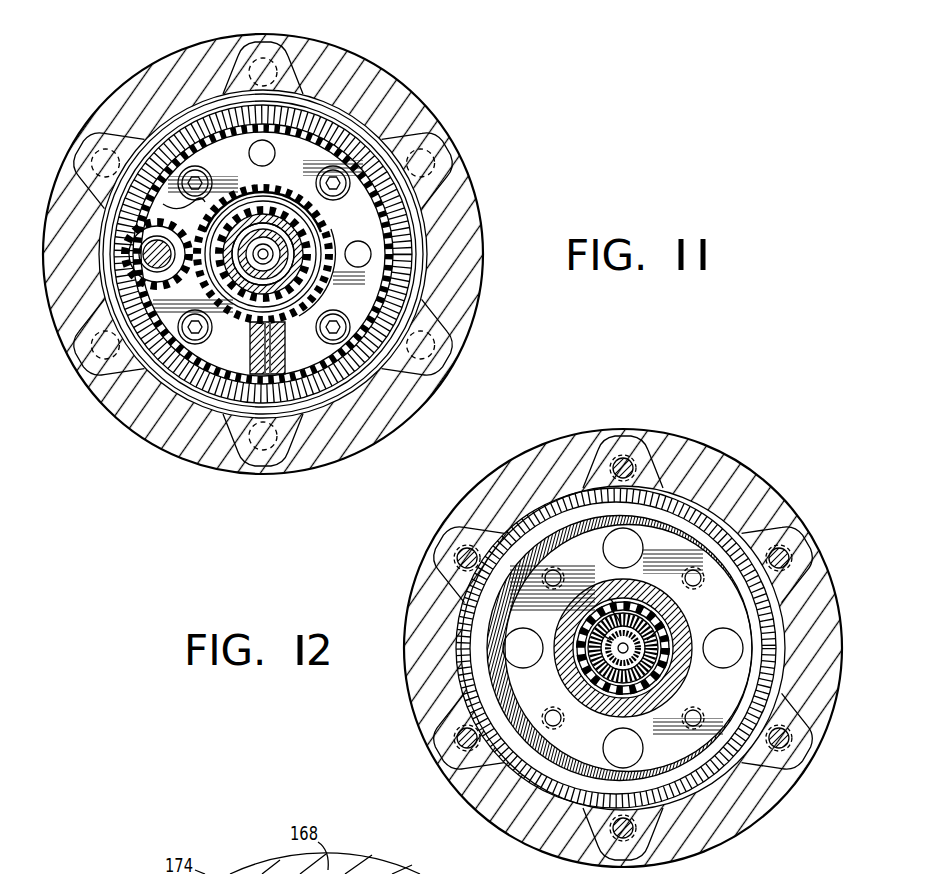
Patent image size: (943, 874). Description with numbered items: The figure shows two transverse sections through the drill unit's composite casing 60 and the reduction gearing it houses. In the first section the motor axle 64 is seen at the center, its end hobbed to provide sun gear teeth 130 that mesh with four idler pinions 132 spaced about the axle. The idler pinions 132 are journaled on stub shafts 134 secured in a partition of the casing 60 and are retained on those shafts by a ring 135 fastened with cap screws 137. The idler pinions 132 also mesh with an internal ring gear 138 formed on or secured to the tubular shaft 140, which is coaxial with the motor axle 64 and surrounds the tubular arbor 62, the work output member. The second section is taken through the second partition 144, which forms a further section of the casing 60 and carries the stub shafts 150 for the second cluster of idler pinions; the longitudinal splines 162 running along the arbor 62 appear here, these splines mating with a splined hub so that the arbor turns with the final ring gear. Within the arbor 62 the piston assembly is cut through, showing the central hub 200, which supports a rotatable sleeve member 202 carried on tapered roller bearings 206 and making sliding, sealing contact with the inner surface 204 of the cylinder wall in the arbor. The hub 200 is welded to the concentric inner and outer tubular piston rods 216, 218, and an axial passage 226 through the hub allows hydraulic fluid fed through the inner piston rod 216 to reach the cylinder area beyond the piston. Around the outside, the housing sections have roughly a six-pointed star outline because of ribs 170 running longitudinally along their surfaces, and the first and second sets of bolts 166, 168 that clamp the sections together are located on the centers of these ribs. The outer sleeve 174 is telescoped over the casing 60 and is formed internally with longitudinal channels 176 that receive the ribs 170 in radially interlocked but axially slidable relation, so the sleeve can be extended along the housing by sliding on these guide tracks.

In FIG. 11, the casing 60 is at (263, 254).
In FIG. 12, the casing 60 is at (623, 651).
In FIG. 11, the tubular arbor 62 is at (256, 275).
In FIG. 12, the tubular arbor 62 is at (649, 653).
In FIG. 11, the motor axle 64 is at (263, 264).
In FIG. 11, the sun gear teeth 130 is at (262, 238).
In FIG. 11, the idler pinions 132 is at (260, 256).
In FIG. 11, the stub shafts 134 is at (259, 254).
In FIG. 11, the ring 135 is at (222, 373).
In FIG. 11, the cap screws 137 is at (265, 245).
In FIG. 11, the internal ring gear 138 is at (319, 254).
In FIG. 12, the tubular shaft 140 is at (606, 648).
In FIG. 12, the second partition 144 is at (616, 645).
In FIG. 12, the stub shafts 150 is at (620, 660).
In FIG. 12, the longitudinal splines 162 is at (619, 648).
In FIG. 11, the first set of bolts 166 is at (271, 254).
In FIG. 12, the second set of bolts 168 is at (621, 648).
In FIG. 11, the ribs 170 is at (259, 254).
In FIG. 12, the ribs 170 is at (631, 655).
In FIG. 11, the outer sleeve 174 is at (263, 243).
In FIG. 12, the outer sleeve 174 is at (623, 633).
In FIG. 11, the longitudinal channels 176 is at (266, 254).
In FIG. 12, the longitudinal channels 176 is at (618, 648).
In FIG. 12, the central hub 200 is at (623, 661).
In FIG. 12, the rotatable sleeve member 202 is at (628, 593).
In FIG. 12, the inner surface of cylinder wall 204 is at (561, 620).
In FIG. 12, the tapered roller bearings 206 is at (685, 620).
In FIG. 11, the inner piston rod 216 is at (191, 223).
In FIG. 11, the outer piston rod 218 is at (302, 243).
In FIG. 12, the axial passage 226 is at (632, 681).